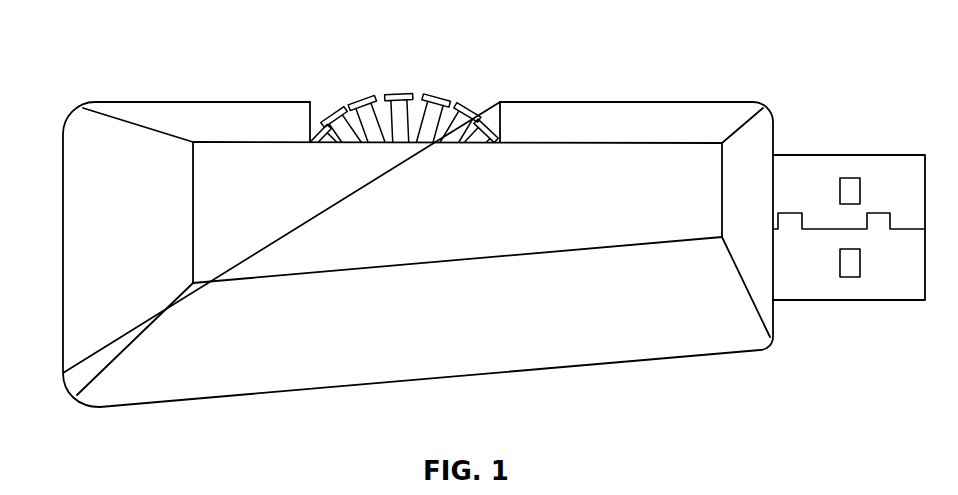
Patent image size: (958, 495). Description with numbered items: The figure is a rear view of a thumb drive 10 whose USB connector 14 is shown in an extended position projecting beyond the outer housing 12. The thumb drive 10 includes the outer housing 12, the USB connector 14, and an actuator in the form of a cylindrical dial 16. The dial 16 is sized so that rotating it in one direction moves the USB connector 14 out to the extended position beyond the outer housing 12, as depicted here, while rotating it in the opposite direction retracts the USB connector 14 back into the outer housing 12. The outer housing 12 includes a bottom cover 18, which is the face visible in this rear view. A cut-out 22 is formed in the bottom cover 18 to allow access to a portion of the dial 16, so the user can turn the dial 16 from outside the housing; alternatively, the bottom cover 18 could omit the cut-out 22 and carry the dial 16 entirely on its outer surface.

The thumb drive 10 is at (502, 62).
The outer housing 12 is at (63, 330).
The USB connector 14 is at (830, 154).
The cylindrical dial 16 is at (398, 108).
The bottom cover 18 is at (675, 170).
The cut-out 22 is at (324, 110).